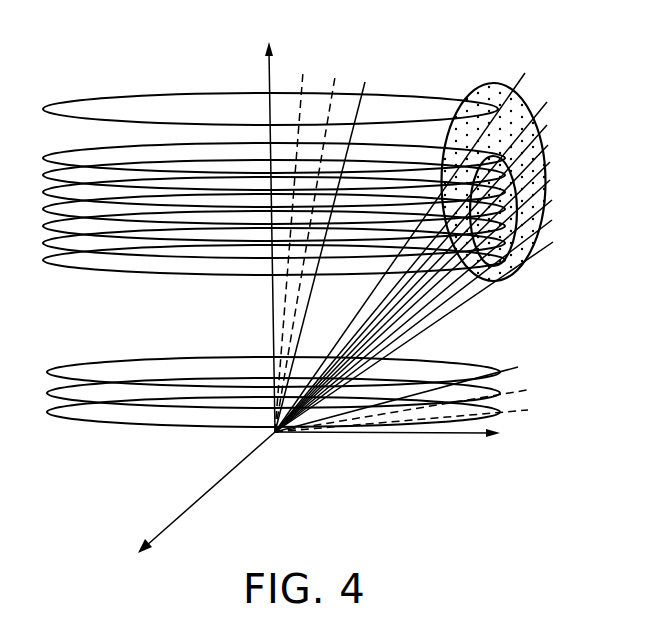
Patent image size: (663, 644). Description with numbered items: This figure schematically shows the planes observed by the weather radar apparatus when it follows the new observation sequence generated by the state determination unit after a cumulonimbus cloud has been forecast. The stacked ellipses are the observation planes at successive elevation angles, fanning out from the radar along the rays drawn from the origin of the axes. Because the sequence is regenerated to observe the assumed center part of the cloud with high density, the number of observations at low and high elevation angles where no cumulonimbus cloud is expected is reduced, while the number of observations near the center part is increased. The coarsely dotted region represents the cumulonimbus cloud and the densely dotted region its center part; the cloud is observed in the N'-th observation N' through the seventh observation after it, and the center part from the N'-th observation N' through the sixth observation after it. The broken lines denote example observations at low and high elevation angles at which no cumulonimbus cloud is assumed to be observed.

The N'-th observation N' is at (321, 269).